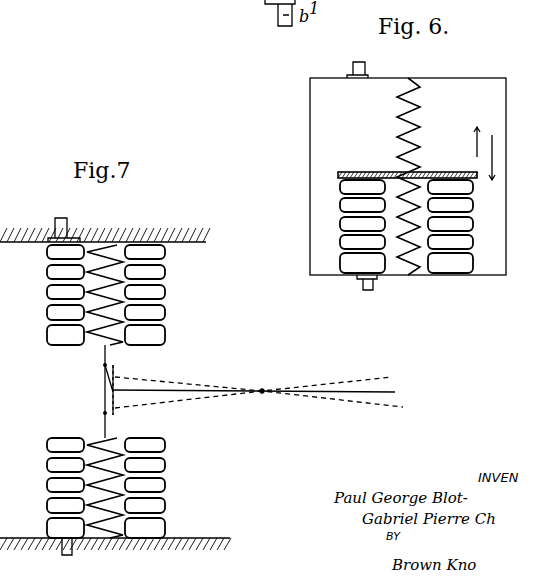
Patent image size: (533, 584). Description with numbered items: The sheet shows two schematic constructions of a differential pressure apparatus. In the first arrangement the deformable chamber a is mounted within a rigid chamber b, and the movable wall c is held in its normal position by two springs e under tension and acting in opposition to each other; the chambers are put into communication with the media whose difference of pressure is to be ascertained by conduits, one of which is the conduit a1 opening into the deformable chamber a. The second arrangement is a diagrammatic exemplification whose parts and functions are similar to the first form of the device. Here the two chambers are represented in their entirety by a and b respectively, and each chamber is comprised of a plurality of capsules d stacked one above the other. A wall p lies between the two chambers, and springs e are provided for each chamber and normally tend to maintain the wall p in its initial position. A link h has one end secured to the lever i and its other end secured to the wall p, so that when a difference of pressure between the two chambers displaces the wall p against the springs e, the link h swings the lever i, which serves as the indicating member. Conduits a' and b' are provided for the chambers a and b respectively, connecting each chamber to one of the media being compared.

In FIG. 6, the deformable chamber a is at (406, 226).
In FIG. 7, the deformable chamber a is at (117, 295).
In FIG. 6, the rigid chamber b is at (408, 109).
In FIG. 7, the rigid chamber b is at (117, 488).
In FIG. 7, the conduit a' is at (72, 220).
In FIG. 6, the conduit b' is at (369, 61).
In FIG. 7, the conduit b' is at (81, 560).
In FIG. 6, the conduit a1 is at (379, 289).
In FIG. 6, the movable wall c is at (452, 172).
In FIG. 7, the capsule d is at (56, 294).
In FIG. 6, the spring e is at (399, 134).
In FIG. 7, the spring e is at (121, 266).
In FIG. 7, the wall p is at (80, 346).
In FIG. 7, the link h is at (113, 376).
In FIG. 7, the lever i is at (218, 390).